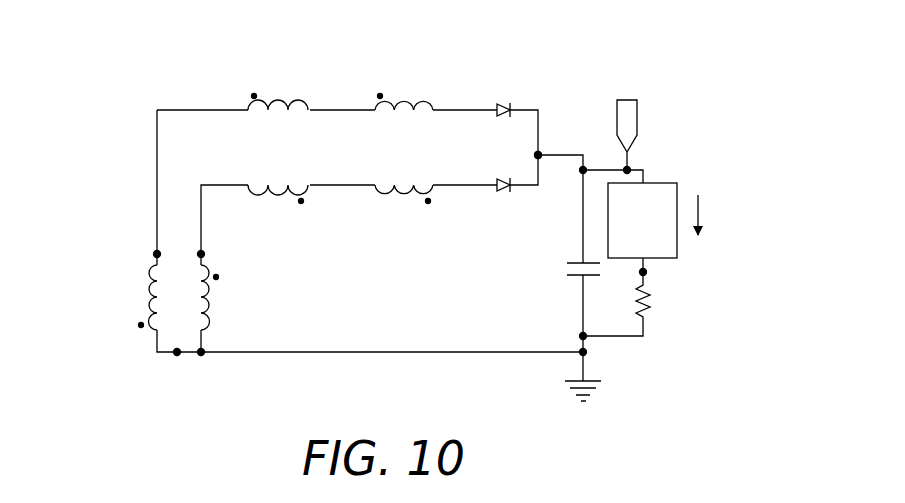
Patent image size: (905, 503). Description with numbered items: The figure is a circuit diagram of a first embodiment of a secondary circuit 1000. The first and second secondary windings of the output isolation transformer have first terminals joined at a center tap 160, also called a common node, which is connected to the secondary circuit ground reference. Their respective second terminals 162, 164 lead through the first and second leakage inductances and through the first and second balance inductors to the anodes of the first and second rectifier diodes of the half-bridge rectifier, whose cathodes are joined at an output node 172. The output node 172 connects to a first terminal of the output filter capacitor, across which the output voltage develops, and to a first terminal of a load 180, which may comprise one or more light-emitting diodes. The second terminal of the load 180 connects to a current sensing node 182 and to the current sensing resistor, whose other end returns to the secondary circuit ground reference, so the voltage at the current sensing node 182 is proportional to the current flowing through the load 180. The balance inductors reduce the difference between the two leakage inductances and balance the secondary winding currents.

The secondary circuit 1000 is at (422, 235).
The center tap 160 is at (178, 355).
The second terminal of the first secondary winding 162 is at (154, 254).
The second terminal of the second secondary winding 164 is at (204, 256).
The output node 172 is at (541, 153).
The load 180 is at (678, 190).
The current sensing node 182 is at (646, 272).